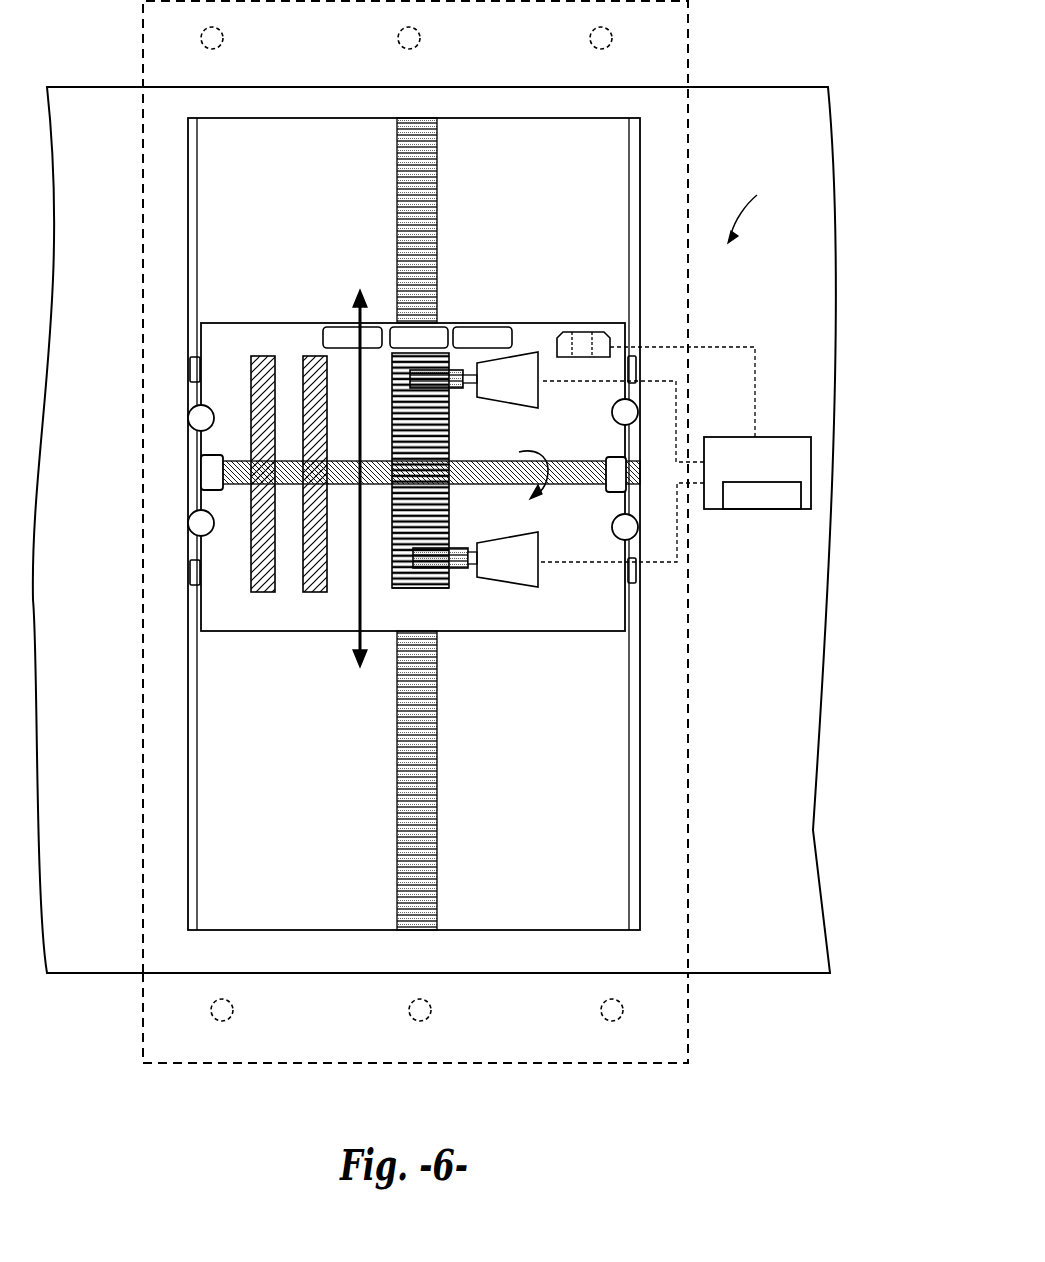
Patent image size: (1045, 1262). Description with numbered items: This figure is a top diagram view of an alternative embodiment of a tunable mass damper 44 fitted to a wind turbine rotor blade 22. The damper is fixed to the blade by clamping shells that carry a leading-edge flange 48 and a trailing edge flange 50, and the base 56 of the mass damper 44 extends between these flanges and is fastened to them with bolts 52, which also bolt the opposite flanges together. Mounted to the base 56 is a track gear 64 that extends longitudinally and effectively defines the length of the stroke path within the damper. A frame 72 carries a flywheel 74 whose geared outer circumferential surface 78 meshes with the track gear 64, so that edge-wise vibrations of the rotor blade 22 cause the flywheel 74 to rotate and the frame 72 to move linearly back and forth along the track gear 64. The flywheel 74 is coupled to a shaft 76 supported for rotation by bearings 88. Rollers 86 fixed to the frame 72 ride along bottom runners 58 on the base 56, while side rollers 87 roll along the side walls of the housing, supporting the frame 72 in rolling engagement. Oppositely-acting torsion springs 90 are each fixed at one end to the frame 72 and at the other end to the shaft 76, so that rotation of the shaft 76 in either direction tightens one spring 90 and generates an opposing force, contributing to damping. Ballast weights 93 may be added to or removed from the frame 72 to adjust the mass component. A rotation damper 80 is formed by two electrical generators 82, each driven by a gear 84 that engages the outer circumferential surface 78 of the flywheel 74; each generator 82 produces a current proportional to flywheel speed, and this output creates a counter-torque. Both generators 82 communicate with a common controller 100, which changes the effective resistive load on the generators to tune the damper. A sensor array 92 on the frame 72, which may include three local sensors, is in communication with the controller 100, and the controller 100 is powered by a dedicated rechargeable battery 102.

The rotor blade 22 is at (112, 166).
The mass damper 44 is at (757, 211).
The leading-edge flange 48 is at (521, 56).
The trailing edge flange 50 is at (334, 1039).
The bolts 52 is at (223, 40).
The base 56 is at (298, 204).
The bottom runners 58 is at (197, 737).
The track gear 64 is at (430, 190).
The frame 72 is at (245, 619).
The flywheel 74 is at (449, 510).
The shaft 76 is at (582, 470).
The geared outer circumferential surface 78 is at (412, 572).
The rotation damper 80 is at (539, 603).
The electrical generator 82 is at (500, 385).
The gear 84 is at (440, 378).
The rollers 86 is at (190, 360).
The side rollers 87 is at (195, 527).
The bearings 88 is at (203, 470).
The torsion springs 90 is at (262, 356).
The sensor array 92 is at (582, 332).
The ballast weights 93 is at (492, 327).
The controller 100 is at (779, 437).
The rechargeable battery 102 is at (755, 509).